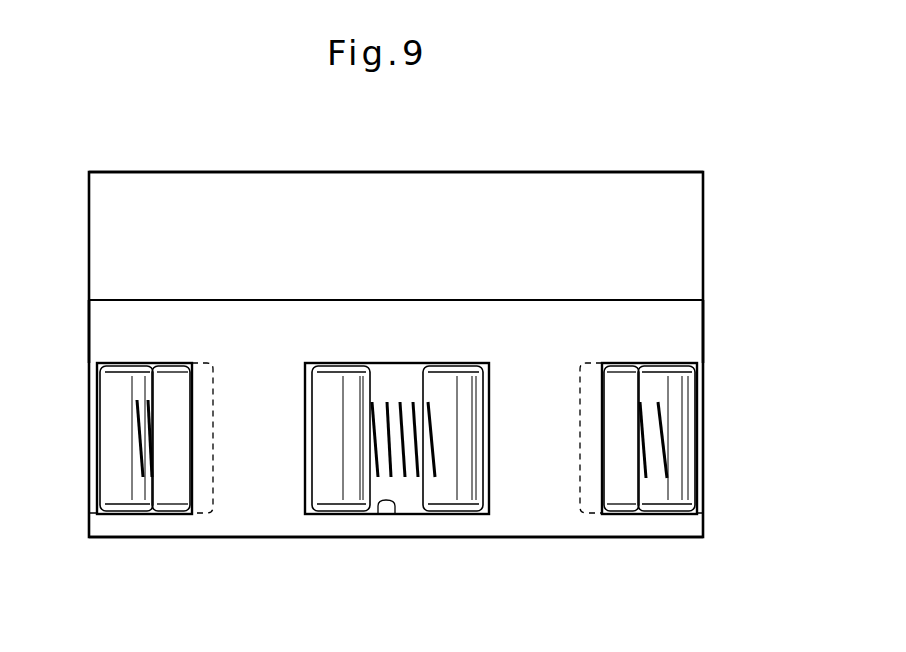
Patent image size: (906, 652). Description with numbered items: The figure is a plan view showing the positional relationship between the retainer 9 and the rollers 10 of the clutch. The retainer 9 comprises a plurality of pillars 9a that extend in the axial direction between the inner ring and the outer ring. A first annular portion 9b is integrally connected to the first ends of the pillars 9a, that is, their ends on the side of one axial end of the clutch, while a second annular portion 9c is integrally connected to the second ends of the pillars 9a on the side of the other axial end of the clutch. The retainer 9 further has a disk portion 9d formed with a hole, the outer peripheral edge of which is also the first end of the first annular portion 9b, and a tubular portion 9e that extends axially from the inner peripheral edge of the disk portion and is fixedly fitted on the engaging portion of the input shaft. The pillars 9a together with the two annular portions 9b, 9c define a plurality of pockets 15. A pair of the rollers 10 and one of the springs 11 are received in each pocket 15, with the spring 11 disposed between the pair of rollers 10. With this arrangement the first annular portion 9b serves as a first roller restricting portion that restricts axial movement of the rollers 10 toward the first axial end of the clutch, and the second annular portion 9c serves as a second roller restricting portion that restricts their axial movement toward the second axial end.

The retainer 9 is at (681, 169).
The pillars 9a is at (250, 470).
The first annular portion 9b is at (638, 332).
The second annular portion 9c is at (657, 523).
The disk portion 9d is at (527, 300).
The tubular portion 9e is at (453, 208).
The rollers 10 is at (327, 480).
The spring 11 is at (403, 467).
The pockets 15 is at (379, 514).